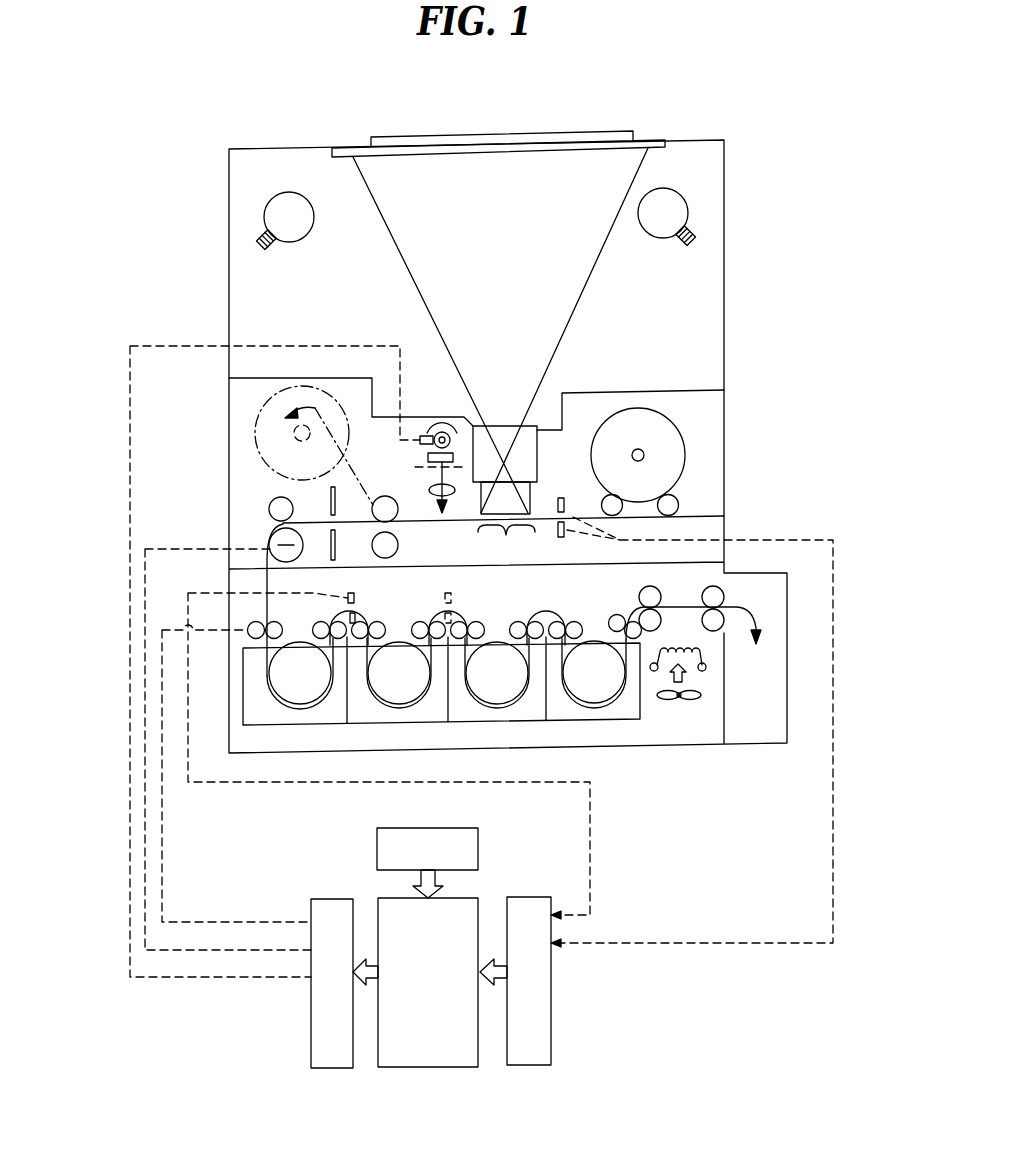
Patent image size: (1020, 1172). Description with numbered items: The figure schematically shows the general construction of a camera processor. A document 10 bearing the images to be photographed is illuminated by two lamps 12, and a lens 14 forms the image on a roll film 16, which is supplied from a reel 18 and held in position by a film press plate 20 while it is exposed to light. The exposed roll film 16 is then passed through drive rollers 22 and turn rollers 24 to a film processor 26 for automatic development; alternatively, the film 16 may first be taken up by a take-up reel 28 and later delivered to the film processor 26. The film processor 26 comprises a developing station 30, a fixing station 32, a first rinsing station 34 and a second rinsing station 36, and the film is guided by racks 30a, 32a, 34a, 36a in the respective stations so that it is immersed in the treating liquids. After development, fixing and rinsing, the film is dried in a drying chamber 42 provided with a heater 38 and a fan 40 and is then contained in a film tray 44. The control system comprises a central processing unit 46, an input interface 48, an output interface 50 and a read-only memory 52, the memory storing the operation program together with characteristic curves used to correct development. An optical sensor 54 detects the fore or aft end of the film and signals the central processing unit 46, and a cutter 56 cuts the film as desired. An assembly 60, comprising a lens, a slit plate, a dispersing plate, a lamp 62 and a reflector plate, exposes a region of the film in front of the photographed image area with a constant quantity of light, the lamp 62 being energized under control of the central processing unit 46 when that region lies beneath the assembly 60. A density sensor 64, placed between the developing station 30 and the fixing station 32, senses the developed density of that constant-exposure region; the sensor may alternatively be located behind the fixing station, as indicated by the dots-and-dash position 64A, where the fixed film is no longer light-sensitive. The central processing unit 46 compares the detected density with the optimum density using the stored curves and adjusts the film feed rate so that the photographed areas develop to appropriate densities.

The document 10 is at (623, 130).
The lamps 12 is at (302, 240).
The lens 14 is at (533, 425).
The roll film 16 is at (653, 518).
The reel 18 is at (683, 440).
The film press plate 20 is at (506, 546).
The drive rollers 22 is at (398, 540).
The turn rollers 24 is at (273, 558).
The film processor 26 is at (633, 750).
The take-up reel 28 is at (258, 415).
The developing station 30 is at (322, 725).
The rack 30a is at (288, 703).
The fixing station 32 is at (423, 725).
The rack 32a is at (390, 705).
The first rinsing station 34 is at (520, 722).
The rack 34a is at (488, 703).
The second rinsing station 36 is at (630, 722).
The rack 36a is at (585, 703).
The heater 38 is at (700, 655).
The fan 40 is at (697, 698).
The drying chamber 42 is at (680, 735).
The film tray 44 is at (772, 722).
The central processing unit (CPU) 46 is at (433, 1068).
The input interface 48 is at (532, 1065).
The output interface 50 is at (325, 1068).
The read-only memory (ROM) 52 is at (468, 827).
The optical sensor 54 is at (575, 517).
The cutter 56 is at (330, 496).
The assembly 60 is at (420, 451).
The lamp 62 is at (468, 420).
The density sensor 64 is at (355, 596).
The sensor 64A is at (452, 596).